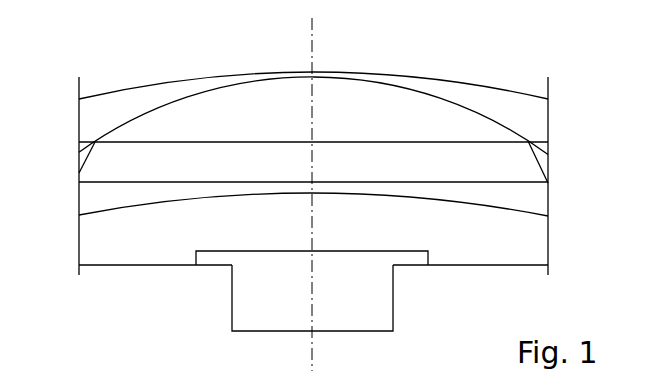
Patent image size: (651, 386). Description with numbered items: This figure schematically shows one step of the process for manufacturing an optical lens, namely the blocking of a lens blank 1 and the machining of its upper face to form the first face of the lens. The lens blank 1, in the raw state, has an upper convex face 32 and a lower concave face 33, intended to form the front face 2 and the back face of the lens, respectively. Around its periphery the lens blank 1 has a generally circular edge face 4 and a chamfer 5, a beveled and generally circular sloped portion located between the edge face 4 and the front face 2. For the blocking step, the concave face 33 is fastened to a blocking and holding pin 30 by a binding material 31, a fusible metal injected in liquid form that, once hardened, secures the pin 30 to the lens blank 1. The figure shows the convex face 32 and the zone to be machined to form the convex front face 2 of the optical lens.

The lens blank 1 is at (482, 132).
The front face 2 is at (431, 92).
The edge face 4 is at (79, 124).
The chamfer 5 is at (548, 155).
The blocking and holding pin 30 is at (232, 315).
The binding material 31 is at (132, 258).
The convex face 32 is at (175, 77).
The concave face 33 is at (100, 213).